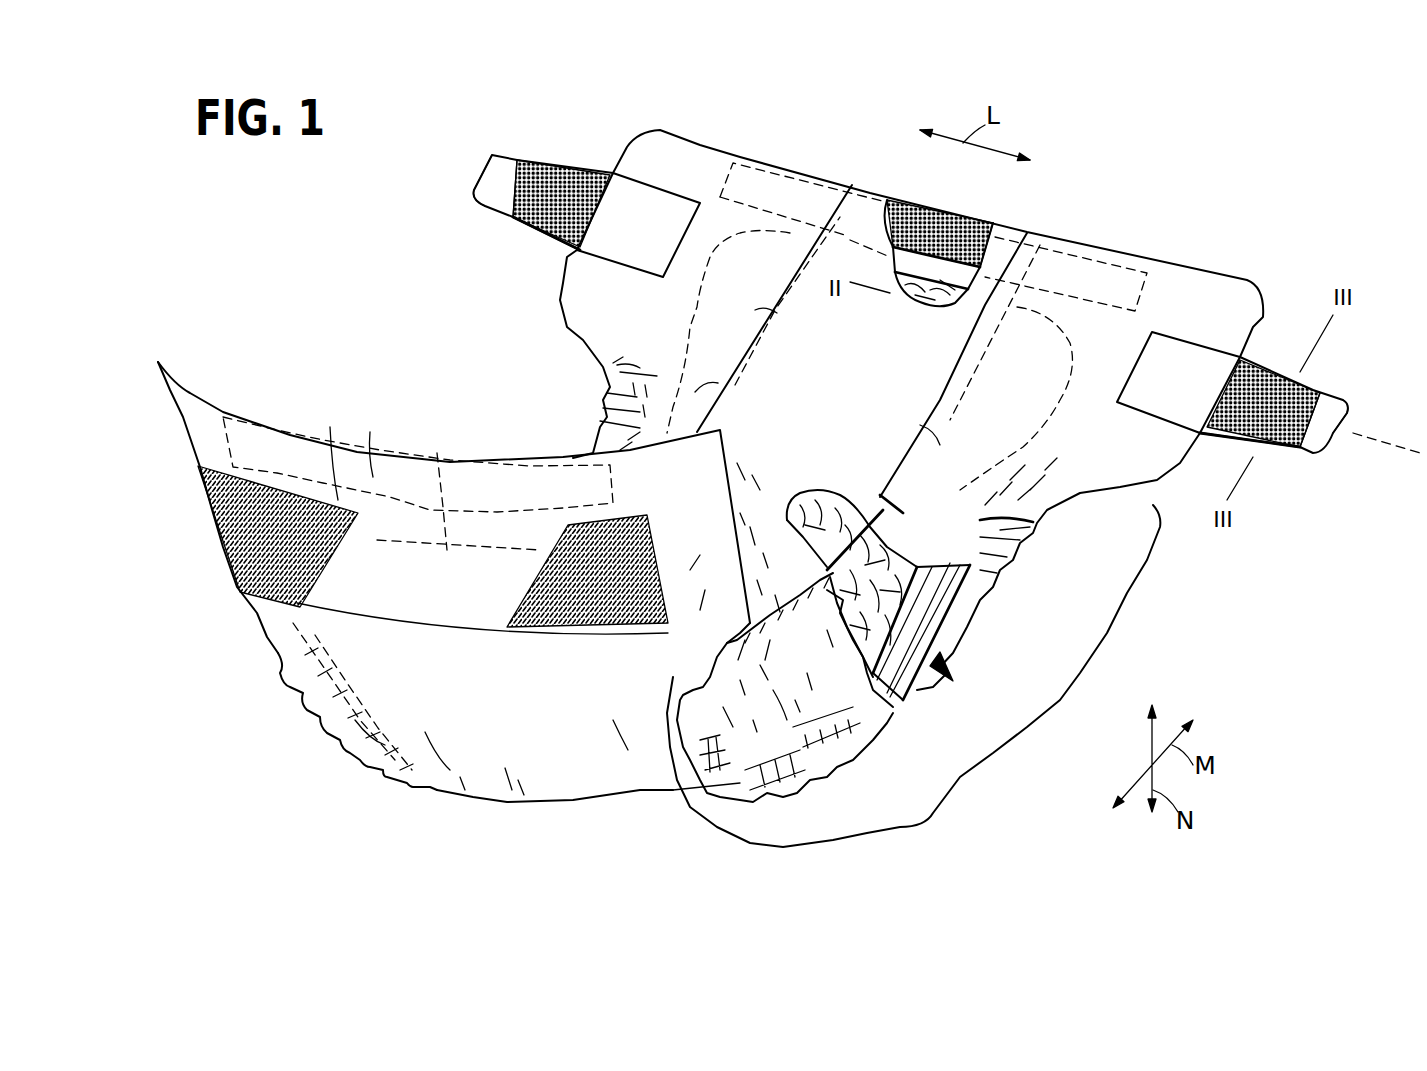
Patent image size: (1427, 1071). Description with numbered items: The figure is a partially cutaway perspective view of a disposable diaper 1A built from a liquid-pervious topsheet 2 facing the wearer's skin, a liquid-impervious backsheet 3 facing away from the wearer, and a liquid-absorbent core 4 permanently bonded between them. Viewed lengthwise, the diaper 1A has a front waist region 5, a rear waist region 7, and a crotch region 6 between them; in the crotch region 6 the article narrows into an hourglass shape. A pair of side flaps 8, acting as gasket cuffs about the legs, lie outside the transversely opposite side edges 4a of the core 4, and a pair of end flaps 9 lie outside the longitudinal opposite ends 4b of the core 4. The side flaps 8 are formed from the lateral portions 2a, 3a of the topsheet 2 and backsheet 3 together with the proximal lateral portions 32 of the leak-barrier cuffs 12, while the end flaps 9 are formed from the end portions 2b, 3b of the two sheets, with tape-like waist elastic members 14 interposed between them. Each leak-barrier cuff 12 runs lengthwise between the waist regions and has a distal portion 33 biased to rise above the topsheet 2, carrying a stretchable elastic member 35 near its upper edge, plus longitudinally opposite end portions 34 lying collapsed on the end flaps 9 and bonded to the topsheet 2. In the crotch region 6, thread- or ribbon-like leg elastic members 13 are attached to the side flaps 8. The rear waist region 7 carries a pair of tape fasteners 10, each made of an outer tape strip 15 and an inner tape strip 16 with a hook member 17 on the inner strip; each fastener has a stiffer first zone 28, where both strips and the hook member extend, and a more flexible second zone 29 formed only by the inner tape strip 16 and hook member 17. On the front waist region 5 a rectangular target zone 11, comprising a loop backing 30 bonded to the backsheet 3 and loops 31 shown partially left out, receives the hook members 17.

The diaper 1A is at (1185, 222).
The topsheet 2 is at (829, 257).
The lateral portions of the topsheet 2a is at (980, 587).
The end portions of the topsheet 2b is at (866, 242).
The backsheet 3 is at (503, 770).
The lateral portions of the backsheet 3a is at (957, 637).
The end portions of the backsheet 3b is at (930, 196).
The liquid-absorbent core 4 is at (823, 500).
The side edges of the core 4a is at (597, 428).
The longitudinal opposite ends of the core 4b is at (967, 197).
The front waist region 5 is at (188, 637).
The crotch region 6 is at (913, 681).
The rear waist region 7 is at (523, 68).
The side flaps 8 is at (630, 400).
The end flaps 9 is at (857, 180).
The tape fasteners 10 is at (497, 153).
The target zone 11 is at (190, 420).
The leak-barrier cuffs 12 is at (777, 313).
The leg elastic members 13 is at (325, 755).
The waist elastic members 14 is at (272, 426).
The outer tape strip 15 is at (537, 237).
The inner tape strip 16 is at (480, 198).
The hook member 17 is at (580, 180).
The first zone 28 is at (550, 187).
The second zone 29 is at (507, 202).
The loop backing 30 is at (507, 530).
The loops 31 is at (660, 525).
The proximal lateral portion 32 is at (610, 407).
The distal portion 33 is at (705, 388).
The end portions 34 is at (774, 228).
The stretchable elastic member 35 is at (763, 350).